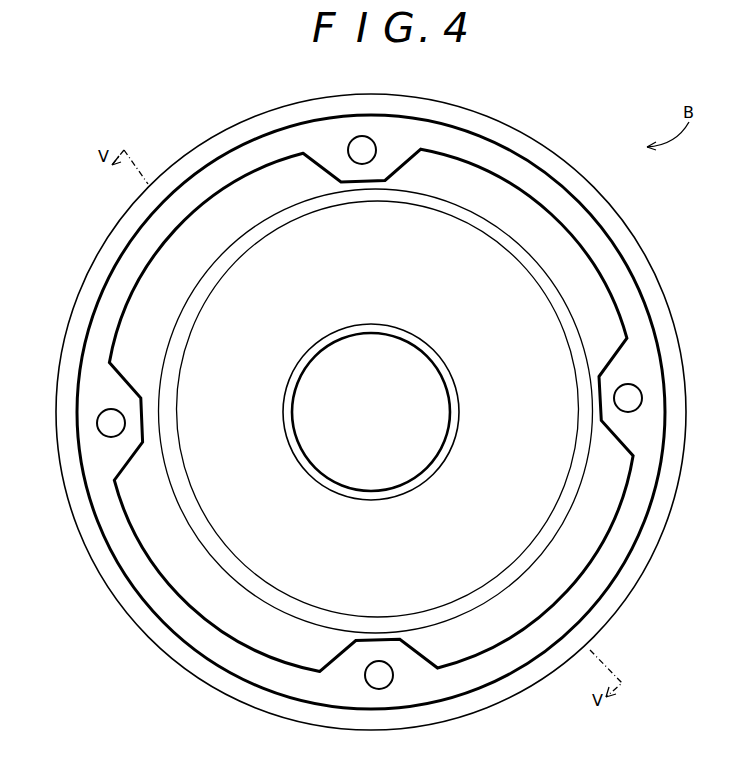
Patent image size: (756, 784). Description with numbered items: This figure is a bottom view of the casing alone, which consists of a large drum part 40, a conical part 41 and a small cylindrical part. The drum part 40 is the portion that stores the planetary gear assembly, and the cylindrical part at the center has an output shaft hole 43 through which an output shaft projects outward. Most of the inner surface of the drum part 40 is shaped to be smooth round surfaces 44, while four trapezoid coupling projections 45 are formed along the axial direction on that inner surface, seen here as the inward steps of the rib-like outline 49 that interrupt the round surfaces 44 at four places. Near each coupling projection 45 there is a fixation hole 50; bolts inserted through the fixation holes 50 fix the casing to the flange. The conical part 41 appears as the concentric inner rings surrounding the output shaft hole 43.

The drum part 40 is at (503, 162).
The conical part 41 is at (202, 473).
The output shaft hole 43 is at (294, 398).
The smooth round surfaces 44 is at (158, 256).
The trapezoid coupling projections 45 is at (390, 165).
The stepped rib 49 is at (238, 236).
The fixation holes 50 is at (360, 160).